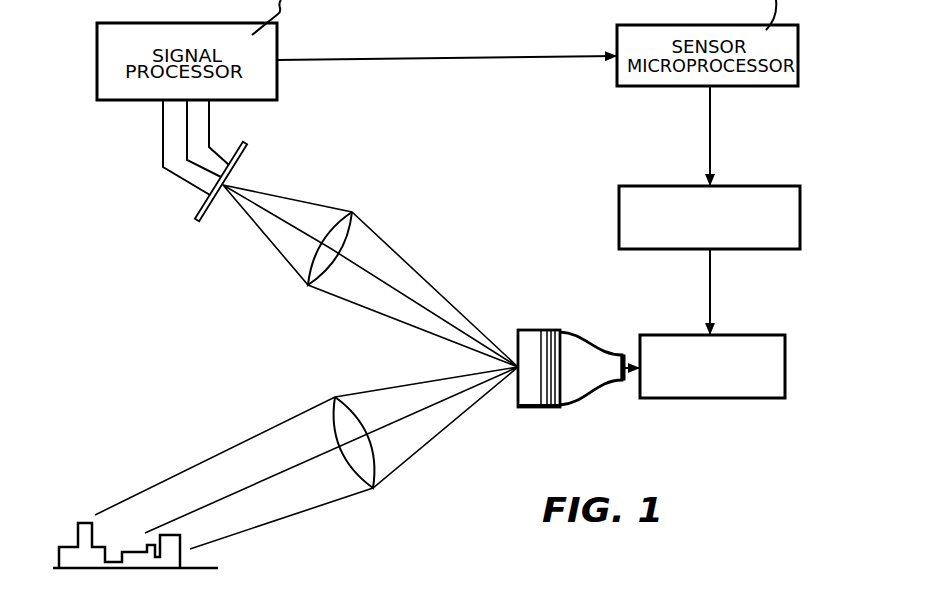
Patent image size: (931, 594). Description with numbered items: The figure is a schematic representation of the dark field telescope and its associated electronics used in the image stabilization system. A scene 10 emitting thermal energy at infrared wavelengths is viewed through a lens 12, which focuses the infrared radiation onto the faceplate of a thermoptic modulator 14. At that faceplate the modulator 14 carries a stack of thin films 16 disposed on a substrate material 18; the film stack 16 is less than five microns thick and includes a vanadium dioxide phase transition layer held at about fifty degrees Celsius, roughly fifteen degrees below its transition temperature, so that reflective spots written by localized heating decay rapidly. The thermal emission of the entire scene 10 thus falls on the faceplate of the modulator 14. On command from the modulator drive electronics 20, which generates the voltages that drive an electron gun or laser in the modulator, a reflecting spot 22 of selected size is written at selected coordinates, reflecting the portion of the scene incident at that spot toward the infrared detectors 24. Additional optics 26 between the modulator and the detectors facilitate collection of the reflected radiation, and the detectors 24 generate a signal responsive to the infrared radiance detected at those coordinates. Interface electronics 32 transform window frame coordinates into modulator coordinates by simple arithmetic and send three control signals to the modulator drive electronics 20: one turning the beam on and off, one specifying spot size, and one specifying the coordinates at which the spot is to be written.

The scene 10 is at (115, 486).
The lens 12 is at (343, 415).
The thermoptic modulator 14 is at (542, 329).
The stack of thin films 16 is at (557, 401).
The substrate material 18 is at (526, 410).
The modulator drive electronics 20 is at (787, 340).
The reflecting spot 22 is at (543, 367).
The infrared detectors 24 is at (245, 160).
The additional optics 26 is at (358, 210).
The interface electronics 32 is at (783, 192).